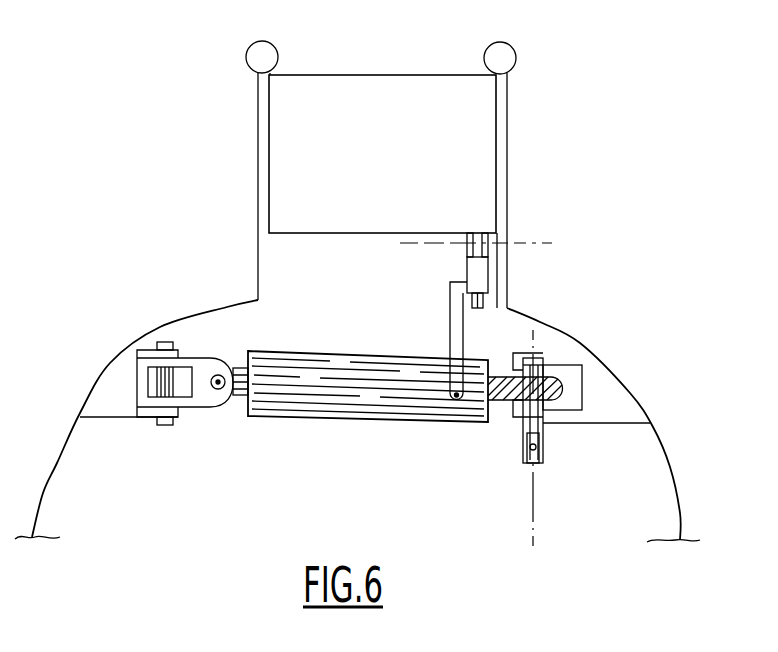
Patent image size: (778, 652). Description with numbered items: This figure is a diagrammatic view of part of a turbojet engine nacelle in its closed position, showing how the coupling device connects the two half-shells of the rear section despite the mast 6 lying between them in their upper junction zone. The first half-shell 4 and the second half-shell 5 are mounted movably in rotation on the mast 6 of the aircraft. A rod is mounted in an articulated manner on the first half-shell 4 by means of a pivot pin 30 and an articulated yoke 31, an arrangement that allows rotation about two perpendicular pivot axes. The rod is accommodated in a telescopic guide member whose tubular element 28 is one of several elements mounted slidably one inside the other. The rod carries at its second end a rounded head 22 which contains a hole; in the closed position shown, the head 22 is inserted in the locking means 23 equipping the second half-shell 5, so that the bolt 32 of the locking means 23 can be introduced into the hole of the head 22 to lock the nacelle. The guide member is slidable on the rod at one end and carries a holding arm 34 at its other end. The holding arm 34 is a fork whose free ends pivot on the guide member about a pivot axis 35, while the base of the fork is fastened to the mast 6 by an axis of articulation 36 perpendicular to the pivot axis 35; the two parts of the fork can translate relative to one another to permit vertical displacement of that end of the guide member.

The first half-shell 4 is at (45, 490).
The second half-shell 5 is at (670, 463).
The mast 6 is at (367, 118).
The head 22 is at (500, 412).
The locking means 23 is at (613, 405).
The third tubular element 28 is at (308, 416).
The pivot pin 30 is at (218, 392).
The articulated yoke 31 is at (200, 387).
The bolt 32 is at (540, 432).
The holding arm 34 is at (457, 303).
The pivot axis 35 is at (452, 403).
The axis of articulation 36 is at (527, 243).